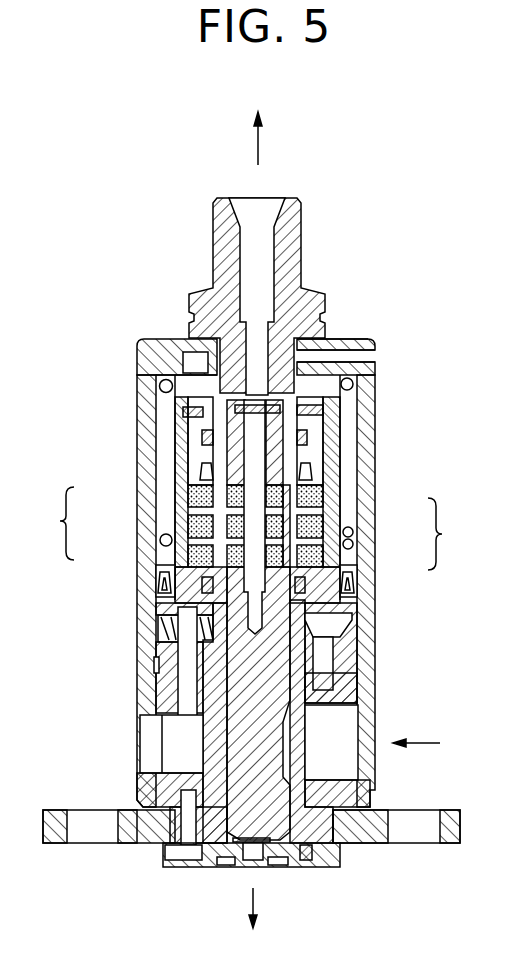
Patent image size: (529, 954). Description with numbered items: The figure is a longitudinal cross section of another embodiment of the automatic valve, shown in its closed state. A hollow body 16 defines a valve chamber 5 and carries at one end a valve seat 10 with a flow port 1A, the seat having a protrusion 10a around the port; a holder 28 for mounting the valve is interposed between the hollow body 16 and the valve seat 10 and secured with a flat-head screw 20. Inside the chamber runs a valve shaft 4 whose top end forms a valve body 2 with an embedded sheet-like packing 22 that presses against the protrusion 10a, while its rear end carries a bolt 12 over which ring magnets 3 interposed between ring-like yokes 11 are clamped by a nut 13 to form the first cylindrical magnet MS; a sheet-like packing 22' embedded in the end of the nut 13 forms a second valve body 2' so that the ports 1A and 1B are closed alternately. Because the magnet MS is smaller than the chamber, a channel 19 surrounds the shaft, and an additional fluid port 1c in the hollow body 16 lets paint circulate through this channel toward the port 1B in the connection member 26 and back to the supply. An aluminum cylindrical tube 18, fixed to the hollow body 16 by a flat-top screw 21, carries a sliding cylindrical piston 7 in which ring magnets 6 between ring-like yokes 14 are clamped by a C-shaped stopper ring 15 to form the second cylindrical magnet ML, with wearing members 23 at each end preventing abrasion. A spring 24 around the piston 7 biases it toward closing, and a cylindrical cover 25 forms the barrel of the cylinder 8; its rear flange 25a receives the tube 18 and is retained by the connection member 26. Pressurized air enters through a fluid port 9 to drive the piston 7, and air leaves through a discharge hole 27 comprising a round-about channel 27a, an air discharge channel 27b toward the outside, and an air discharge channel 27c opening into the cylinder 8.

The flow port 1A is at (250, 862).
The port 1B is at (262, 202).
The fluid port 1c is at (345, 725).
The valve body 2 is at (328, 881).
The valve body 2' is at (363, 420).
The ring magnet 3 is at (283, 500).
The valve shaft 4 is at (330, 697).
The valve chamber 5 is at (278, 748).
The ring magnet 6 is at (197, 502).
The cylindrical piston 7 is at (188, 428).
The cylinder 8 is at (186, 470).
The fluid port 9 is at (167, 748).
The valve seat 10 is at (338, 862).
The protrusion 10a is at (273, 856).
The ring-like yoke 11 is at (268, 478).
The bolt 12 is at (258, 581).
The nut 13 is at (287, 455).
The ring-like yoke 14 is at (193, 483).
The C-shaped stopper ring 15 is at (193, 412).
The hollow body 16 is at (370, 793).
The cylindrical tube 18 is at (167, 612).
The channel 19 is at (283, 680).
The flat-head screw 20 is at (188, 828).
The flat-top screw 21 is at (323, 650).
The sheet-like packing 22 is at (160, 882).
The sheet-like packing 22' is at (395, 388).
The wearing member 23 is at (203, 468).
The spring 24 is at (160, 392).
The cylindrical cover 25 is at (137, 638).
The flange 25a is at (143, 347).
The connection member 26 is at (308, 296).
The discharge hole 27 is at (372, 341).
The round-about channel 27a is at (327, 328).
The air discharge channel 27b is at (376, 356).
The air discharge channel 27c is at (182, 350).
The holder 28 is at (452, 843).
The second cylindrical magnet ML is at (46, 523).
The first cylindrical magnet MS is at (452, 534).